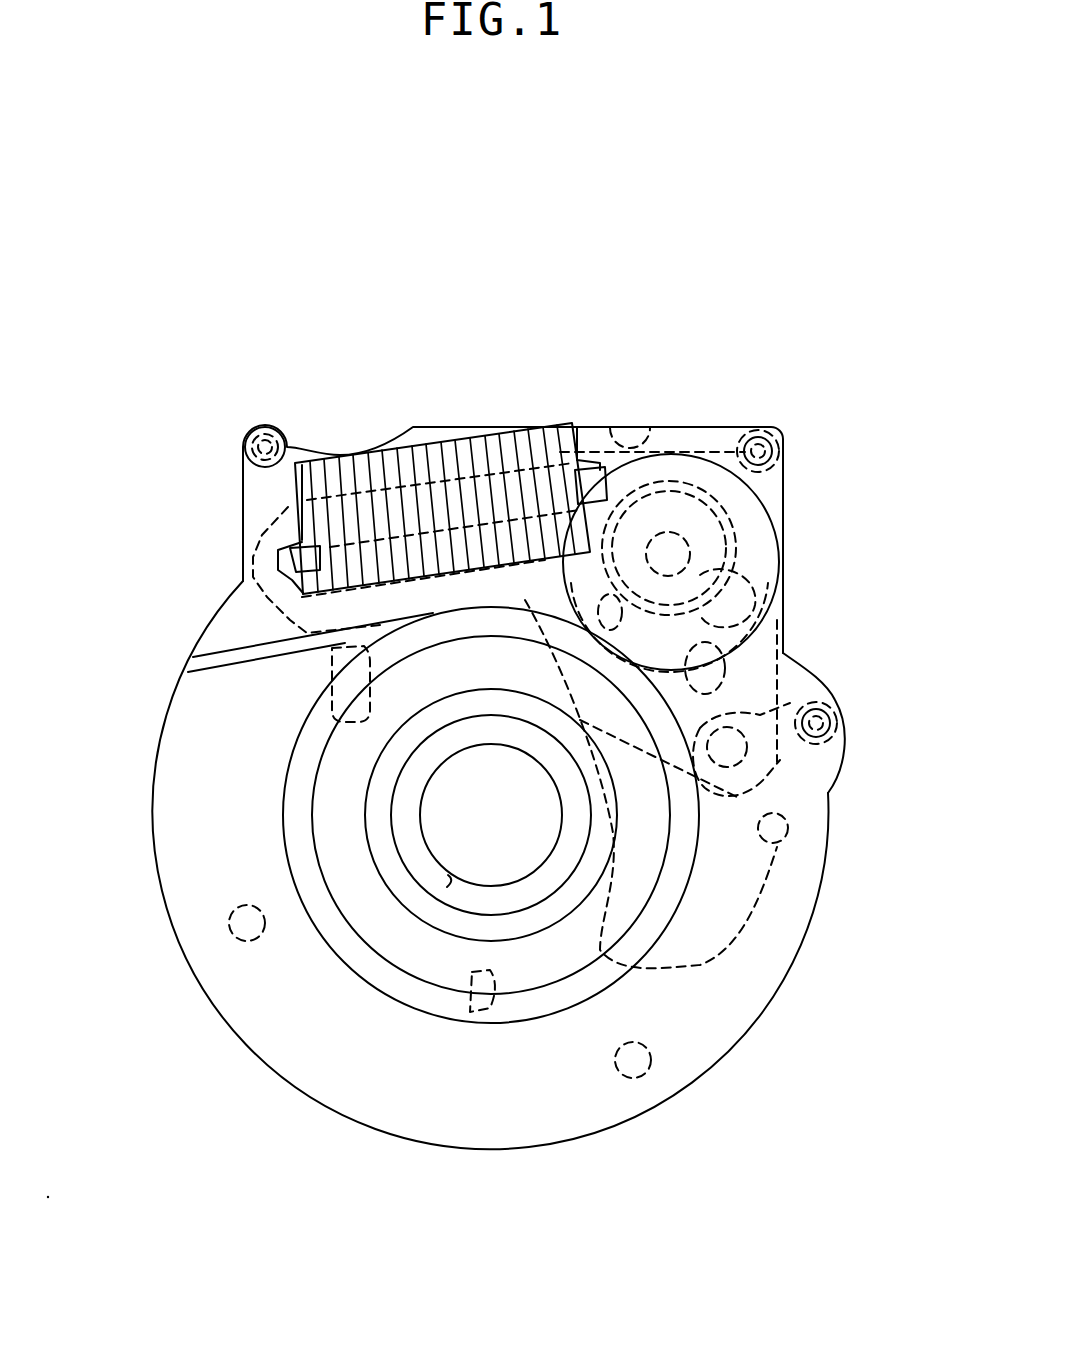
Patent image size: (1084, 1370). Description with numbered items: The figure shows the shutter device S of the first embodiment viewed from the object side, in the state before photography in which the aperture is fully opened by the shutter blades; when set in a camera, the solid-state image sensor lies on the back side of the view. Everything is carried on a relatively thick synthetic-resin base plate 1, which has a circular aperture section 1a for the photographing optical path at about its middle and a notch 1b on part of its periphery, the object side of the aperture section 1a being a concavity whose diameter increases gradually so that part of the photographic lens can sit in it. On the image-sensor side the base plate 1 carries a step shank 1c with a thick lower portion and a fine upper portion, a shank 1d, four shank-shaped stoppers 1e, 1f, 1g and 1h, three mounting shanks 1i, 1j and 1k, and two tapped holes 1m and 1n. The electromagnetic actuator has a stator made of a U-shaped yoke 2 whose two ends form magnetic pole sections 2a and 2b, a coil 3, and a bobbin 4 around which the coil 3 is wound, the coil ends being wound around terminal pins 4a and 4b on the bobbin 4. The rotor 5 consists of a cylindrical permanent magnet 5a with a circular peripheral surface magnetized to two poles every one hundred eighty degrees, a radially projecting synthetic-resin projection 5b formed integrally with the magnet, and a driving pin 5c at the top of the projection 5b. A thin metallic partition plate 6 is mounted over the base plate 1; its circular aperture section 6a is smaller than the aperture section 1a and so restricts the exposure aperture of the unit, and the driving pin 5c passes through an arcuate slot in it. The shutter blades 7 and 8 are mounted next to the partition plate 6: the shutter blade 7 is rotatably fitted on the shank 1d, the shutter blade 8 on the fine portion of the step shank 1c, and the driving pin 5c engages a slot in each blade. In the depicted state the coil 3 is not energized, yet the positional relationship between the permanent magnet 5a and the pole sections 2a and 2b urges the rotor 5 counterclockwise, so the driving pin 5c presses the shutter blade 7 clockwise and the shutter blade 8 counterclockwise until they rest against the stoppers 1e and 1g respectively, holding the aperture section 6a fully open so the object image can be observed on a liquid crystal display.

The shutter device S is at (671, 292).
The base plate 1 is at (300, 1053).
The aperture section 1a is at (447, 887).
The notch 1b is at (290, 505).
The step shank 1c is at (683, 540).
The shank 1d is at (745, 753).
The stopper 1e is at (360, 645).
The stopper 1f is at (640, 418).
The stopper 1g is at (788, 833).
The stopper 1h is at (490, 1005).
The mounting shank 1i is at (250, 430).
The mounting shank 1j is at (785, 432).
The mounting shank 1k is at (842, 720).
The tapped hole 1m is at (237, 932).
The tapped hole 1n is at (630, 1062).
The yoke 2 is at (235, 622).
The magnetic pole section 2a is at (705, 428).
The magnetic pole section 2b is at (612, 632).
The coil 3 is at (457, 455).
The bobbin 4 is at (588, 487).
The terminal pin 4a is at (292, 570).
The terminal pin 4b is at (602, 468).
The rotor 5 is at (740, 536).
The permanent magnet 5a is at (713, 557).
The projection 5b is at (770, 600).
The driving pin 5c is at (725, 683).
The partition plate 6 is at (405, 810).
The aperture section 6a is at (432, 841).
The shutter blade 7 is at (367, 713).
The shutter blade 8 is at (730, 903).